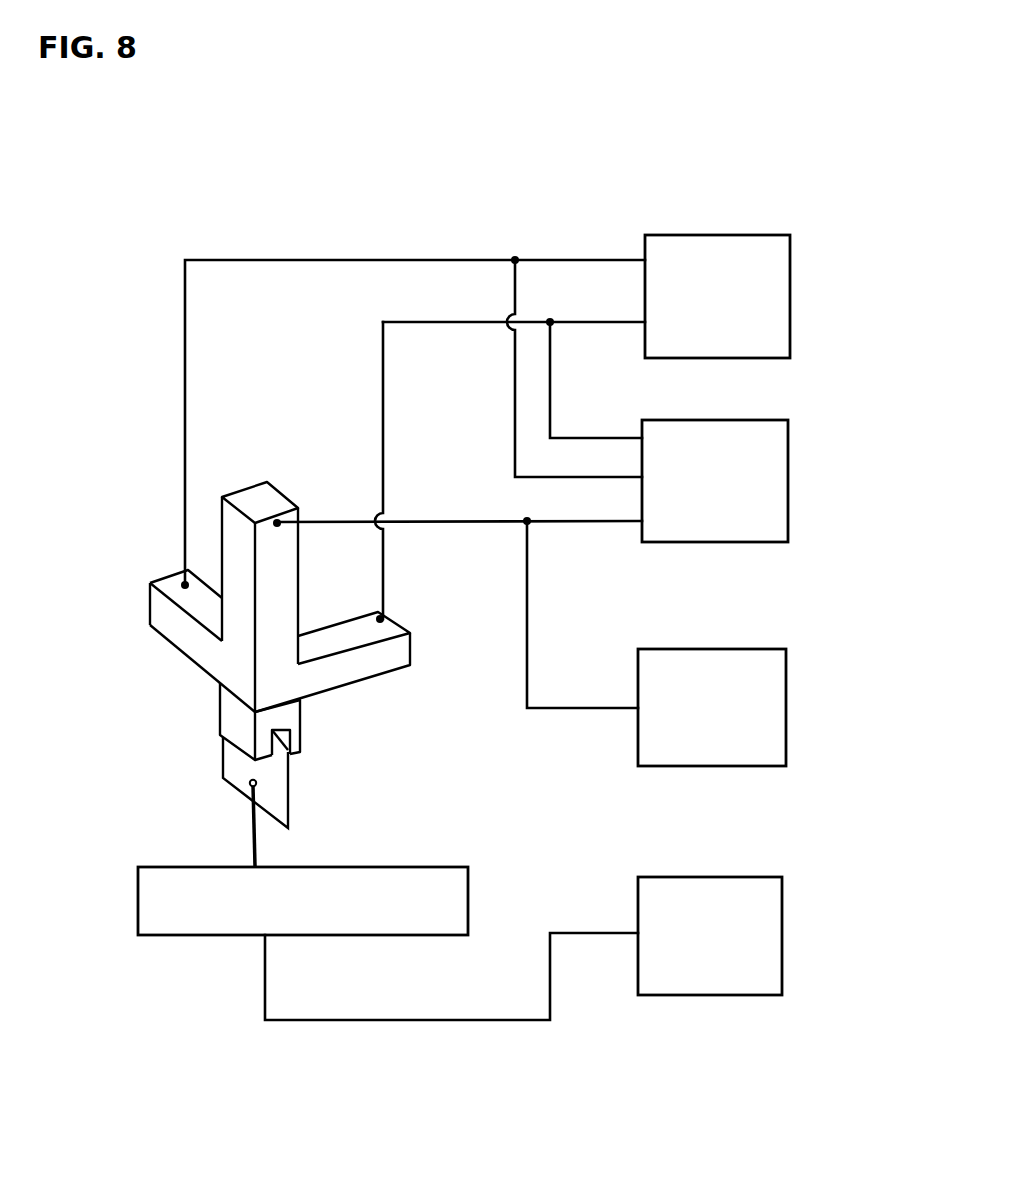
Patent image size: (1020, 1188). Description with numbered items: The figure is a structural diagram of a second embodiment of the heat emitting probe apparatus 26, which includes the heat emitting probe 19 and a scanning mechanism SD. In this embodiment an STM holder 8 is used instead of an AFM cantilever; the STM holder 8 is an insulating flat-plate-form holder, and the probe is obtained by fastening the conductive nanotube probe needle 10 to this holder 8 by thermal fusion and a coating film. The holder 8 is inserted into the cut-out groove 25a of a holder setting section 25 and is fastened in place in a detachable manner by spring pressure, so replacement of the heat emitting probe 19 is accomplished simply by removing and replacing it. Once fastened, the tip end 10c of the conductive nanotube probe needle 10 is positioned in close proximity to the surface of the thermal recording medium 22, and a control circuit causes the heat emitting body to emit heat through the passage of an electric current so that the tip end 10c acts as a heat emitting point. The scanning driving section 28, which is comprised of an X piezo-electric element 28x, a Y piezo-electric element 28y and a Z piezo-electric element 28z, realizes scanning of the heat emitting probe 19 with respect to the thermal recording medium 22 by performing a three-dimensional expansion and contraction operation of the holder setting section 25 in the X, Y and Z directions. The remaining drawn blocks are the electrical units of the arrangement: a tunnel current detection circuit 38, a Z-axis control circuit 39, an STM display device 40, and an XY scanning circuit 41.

The heat emitting probe apparatus 26 is at (473, 196).
The XY scanning circuit 41 is at (717, 296).
The STM display device 40 is at (715, 481).
The Z-axis control circuit 39 is at (712, 707).
The tunnel current detection circuit 38 is at (710, 936).
The scanning mechanism SD is at (742, 601).
The scanning driving section 28 is at (268, 552).
The Z piezo-electric element 28z is at (273, 508).
The Y piezo-electric element 28y is at (152, 622).
The X piezo-electric element 28x is at (377, 662).
The holder setting section 25 is at (269, 721).
The cut-out groove 25a is at (289, 732).
The heat emitting probe 19 is at (176, 801).
The STM holder 8 is at (227, 762).
The conductive nanotube probe needle 10 is at (192, 823).
The tip end 10c is at (250, 862).
The thermal recording medium 22 is at (207, 918).